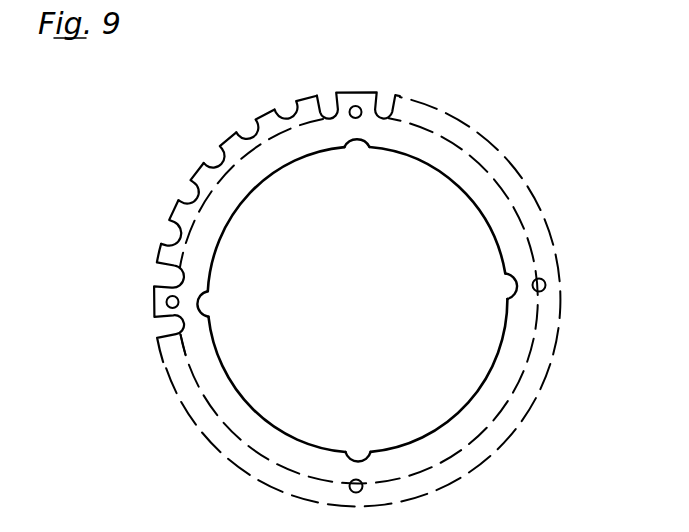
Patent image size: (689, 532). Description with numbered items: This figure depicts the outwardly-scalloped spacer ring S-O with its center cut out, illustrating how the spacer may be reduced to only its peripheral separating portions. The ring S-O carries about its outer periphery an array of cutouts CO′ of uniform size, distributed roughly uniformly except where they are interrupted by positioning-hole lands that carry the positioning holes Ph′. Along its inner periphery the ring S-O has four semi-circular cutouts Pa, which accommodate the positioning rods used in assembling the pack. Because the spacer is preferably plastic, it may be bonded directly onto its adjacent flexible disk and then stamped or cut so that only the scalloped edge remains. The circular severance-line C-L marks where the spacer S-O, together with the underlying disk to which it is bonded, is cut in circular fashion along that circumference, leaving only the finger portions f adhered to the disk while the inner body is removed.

The semi-circular cutout Pa is at (357, 140).
The positioning hole Ph′ is at (361, 91).
The severance-line C-L is at (323, 112).
The finger portion f is at (221, 137).
The cutout CO′ is at (186, 195).
The outwardly-scalloped ring S-O is at (458, 115).